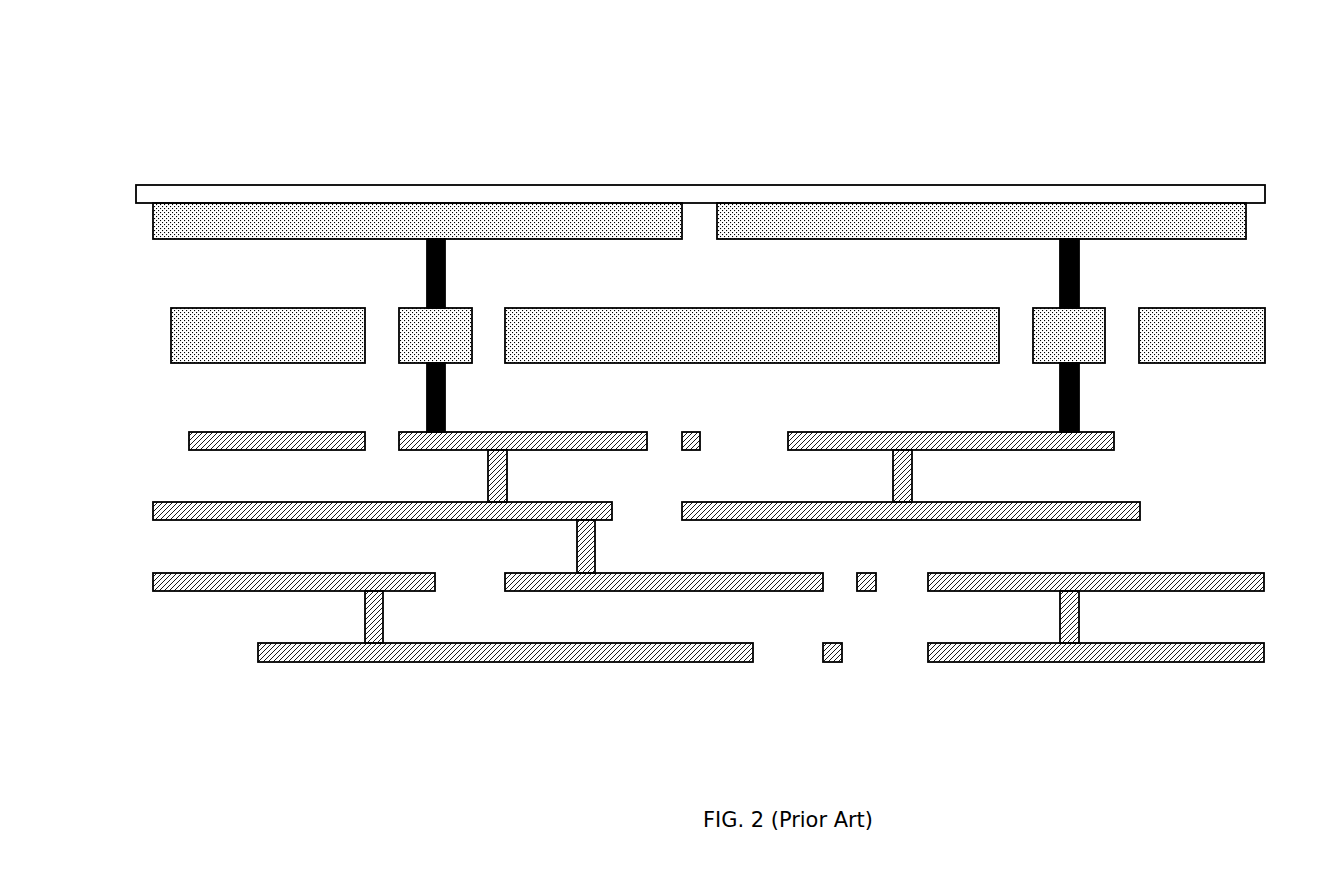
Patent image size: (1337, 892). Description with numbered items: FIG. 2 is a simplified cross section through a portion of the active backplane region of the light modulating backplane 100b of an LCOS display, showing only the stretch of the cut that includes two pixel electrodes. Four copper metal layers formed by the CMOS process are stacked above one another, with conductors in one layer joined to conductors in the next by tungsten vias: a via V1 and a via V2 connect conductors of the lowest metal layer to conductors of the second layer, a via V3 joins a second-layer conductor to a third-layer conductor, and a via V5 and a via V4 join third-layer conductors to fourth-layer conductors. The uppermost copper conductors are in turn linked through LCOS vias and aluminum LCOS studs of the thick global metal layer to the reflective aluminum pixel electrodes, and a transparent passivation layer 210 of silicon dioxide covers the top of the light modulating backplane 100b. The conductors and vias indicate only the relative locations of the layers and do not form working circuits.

The light modulating backplane 100b is at (816, 46).
The transparent passivation layer 210 is at (699, 185).
The via V1 is at (383, 625).
The via V2 is at (1080, 627).
The via V3 is at (595, 556).
The via V4 is at (912, 486).
The via V5 is at (507, 486).